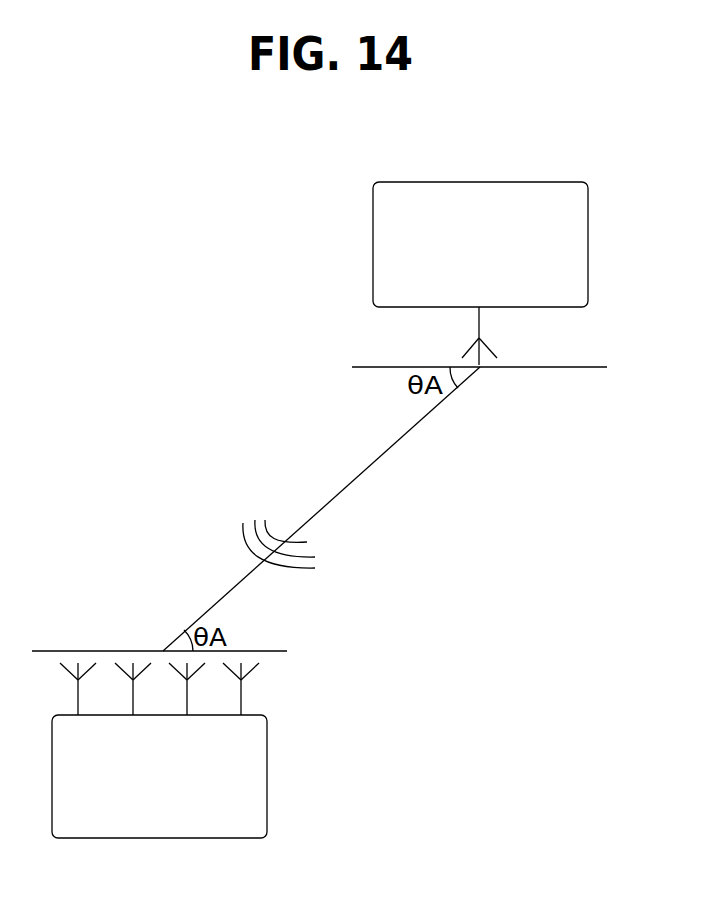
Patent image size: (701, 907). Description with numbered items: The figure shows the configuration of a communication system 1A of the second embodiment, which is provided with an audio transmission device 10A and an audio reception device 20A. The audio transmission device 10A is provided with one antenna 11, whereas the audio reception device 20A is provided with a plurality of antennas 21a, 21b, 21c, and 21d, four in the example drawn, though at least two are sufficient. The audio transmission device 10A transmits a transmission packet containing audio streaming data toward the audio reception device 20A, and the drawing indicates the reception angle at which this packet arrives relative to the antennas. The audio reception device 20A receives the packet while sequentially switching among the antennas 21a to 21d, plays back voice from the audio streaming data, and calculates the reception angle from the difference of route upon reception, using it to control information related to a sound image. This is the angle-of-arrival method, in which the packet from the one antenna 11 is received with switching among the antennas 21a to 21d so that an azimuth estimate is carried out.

The communication system 1A is at (122, 348).
The audio transmission device 10A is at (478, 182).
The antenna 11 is at (482, 326).
The audio reception device 20A is at (268, 748).
The antenna 21a is at (244, 674).
The antenna 21b is at (190, 674).
The antenna 21c is at (136, 674).
The antenna 21d is at (81, 674).